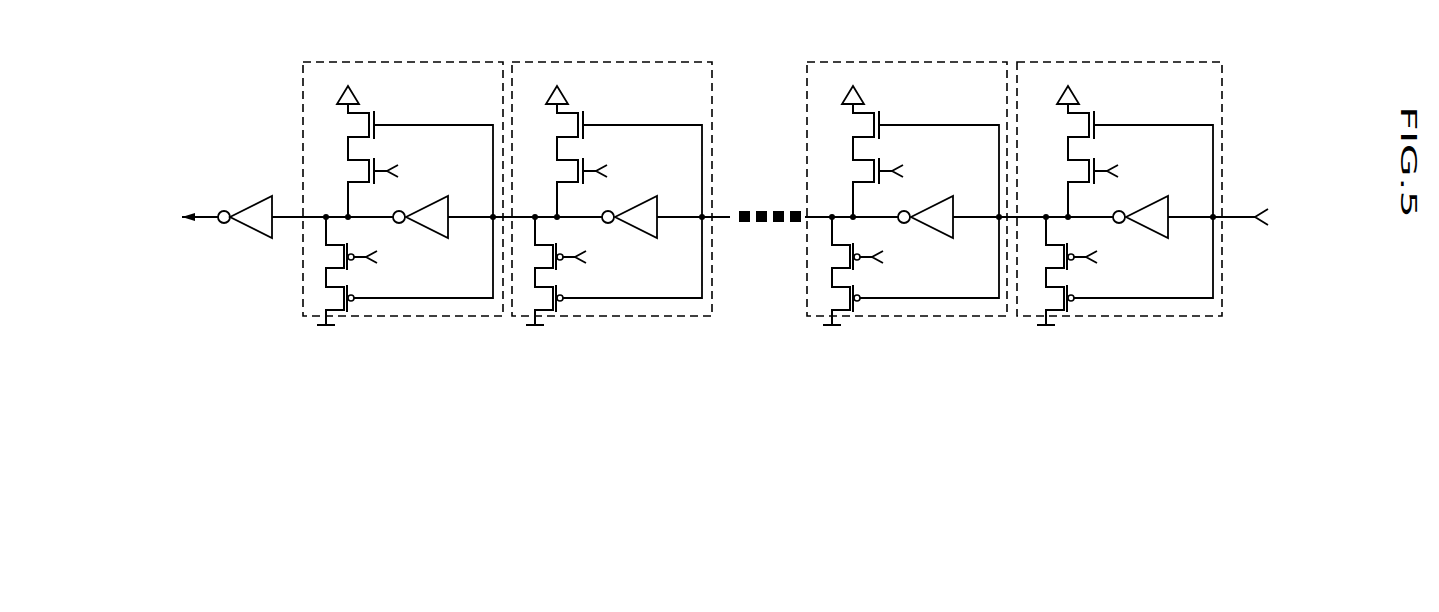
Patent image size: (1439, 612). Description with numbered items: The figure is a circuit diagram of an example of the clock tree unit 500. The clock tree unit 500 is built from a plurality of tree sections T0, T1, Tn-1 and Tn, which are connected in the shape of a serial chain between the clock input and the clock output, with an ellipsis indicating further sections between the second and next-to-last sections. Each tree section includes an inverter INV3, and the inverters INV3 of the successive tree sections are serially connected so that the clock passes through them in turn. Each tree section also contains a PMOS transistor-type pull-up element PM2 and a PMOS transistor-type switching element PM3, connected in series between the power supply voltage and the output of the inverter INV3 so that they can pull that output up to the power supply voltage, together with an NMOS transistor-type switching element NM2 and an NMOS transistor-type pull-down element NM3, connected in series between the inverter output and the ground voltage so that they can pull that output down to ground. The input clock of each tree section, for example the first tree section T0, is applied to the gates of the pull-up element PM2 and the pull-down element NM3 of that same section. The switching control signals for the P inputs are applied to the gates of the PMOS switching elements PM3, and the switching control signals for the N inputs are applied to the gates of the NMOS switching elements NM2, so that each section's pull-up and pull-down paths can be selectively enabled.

The clock tree unit 500 is at (348, 429).
The tree section T0 is at (1119, 219).
The tree section T1 is at (910, 316).
The tree section Tn-1 is at (612, 316).
The tree section Tn is at (403, 316).
The inverter INV3 is at (1130, 211).
The NMOS transistor-type switching element NM2 is at (1080, 181).
The NMOS transistor-type pull-down element NM3 is at (1128, 201).
The PMOS transistor-type pull-up element PM2 is at (1047, 300).
The PMOS transistor-type switching element PM3 is at (1059, 246).